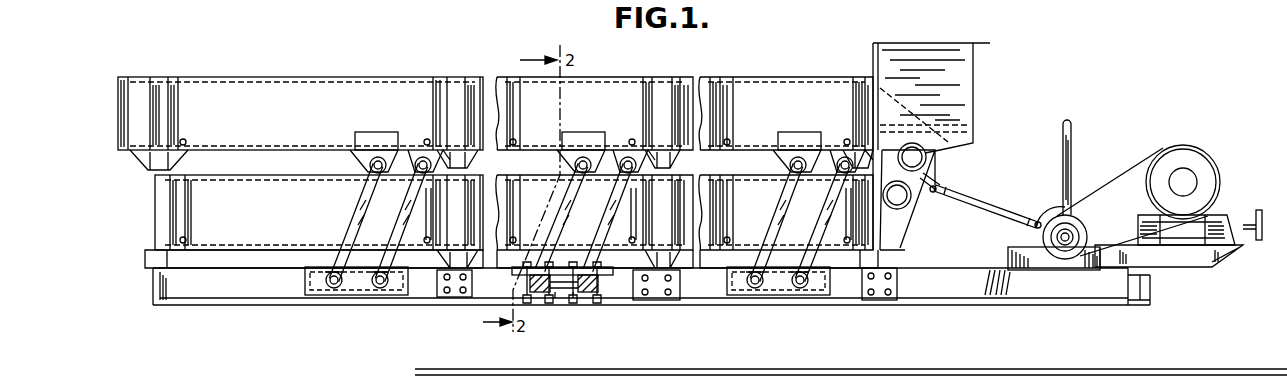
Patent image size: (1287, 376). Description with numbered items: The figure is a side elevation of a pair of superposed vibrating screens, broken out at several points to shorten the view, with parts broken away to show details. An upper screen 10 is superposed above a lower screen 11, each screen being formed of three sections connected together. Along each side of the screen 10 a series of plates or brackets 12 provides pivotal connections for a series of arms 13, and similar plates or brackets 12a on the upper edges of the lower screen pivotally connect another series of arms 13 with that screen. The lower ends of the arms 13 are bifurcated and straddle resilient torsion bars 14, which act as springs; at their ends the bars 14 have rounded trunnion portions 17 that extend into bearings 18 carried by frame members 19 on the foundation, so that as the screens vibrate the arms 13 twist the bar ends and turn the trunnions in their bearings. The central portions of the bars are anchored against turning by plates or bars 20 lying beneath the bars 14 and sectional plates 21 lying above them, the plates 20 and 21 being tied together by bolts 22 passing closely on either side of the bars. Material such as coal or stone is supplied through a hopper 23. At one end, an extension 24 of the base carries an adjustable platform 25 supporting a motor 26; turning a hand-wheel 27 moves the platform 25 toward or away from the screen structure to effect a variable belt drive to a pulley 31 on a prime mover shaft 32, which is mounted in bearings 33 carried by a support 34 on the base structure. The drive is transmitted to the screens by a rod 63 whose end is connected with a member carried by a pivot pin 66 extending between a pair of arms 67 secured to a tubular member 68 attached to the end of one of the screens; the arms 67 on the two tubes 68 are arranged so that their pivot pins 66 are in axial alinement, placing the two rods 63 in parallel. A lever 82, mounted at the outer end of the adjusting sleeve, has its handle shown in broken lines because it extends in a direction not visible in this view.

The screen 10 is at (333, 78).
The screen 11 is at (228, 238).
The plates or brackets 12 is at (373, 135).
The plates or brackets 12a is at (427, 190).
The arms 13 is at (398, 198).
The resilient torsion bars 14 is at (540, 296).
The trunnion portions 17 is at (334, 290).
The bearings 18 is at (327, 276).
The frame members 19 is at (426, 300).
The plates or bars 20 is at (614, 298).
The plates 21 is at (406, 270).
The bolts 22 is at (564, 292).
The hopper 23 is at (962, 97).
The extension 24 is at (1180, 262).
The adjustable platform 25 is at (1230, 222).
The motor 26 is at (1208, 173).
The hand-wheel 27 is at (1260, 238).
The pulley 31 is at (1082, 228).
The prime mover shaft 32 is at (1062, 238).
The bearings 33 is at (1057, 218).
The support 34 is at (1030, 259).
The rod 63 is at (1000, 205).
The pivot pin 66 is at (934, 194).
The arms 67 is at (922, 140).
The tubular member 68 is at (935, 172).
The lever 82 is at (1073, 140).